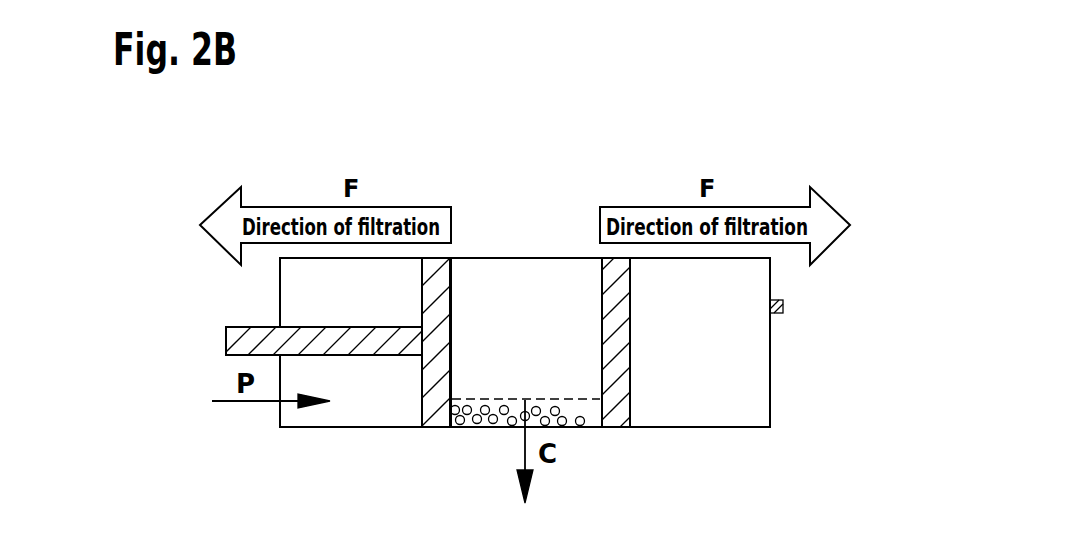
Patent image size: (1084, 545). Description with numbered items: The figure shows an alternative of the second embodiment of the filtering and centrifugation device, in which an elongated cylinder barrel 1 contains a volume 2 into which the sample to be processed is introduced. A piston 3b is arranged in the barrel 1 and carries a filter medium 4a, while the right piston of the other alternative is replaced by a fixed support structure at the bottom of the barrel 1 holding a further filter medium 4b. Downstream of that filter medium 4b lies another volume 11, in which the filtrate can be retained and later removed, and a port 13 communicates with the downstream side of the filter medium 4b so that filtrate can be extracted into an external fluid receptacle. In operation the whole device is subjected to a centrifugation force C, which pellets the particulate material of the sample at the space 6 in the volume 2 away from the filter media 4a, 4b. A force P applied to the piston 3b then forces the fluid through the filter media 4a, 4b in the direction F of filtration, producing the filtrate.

The cylinder barrel 1 is at (703, 428).
The volume 2 is at (524, 288).
The piston 3b is at (437, 413).
The filter medium 4a is at (468, 272).
The filter medium 4b is at (585, 272).
The space 6 is at (582, 407).
The volume 11 is at (750, 385).
The port 13 is at (784, 307).